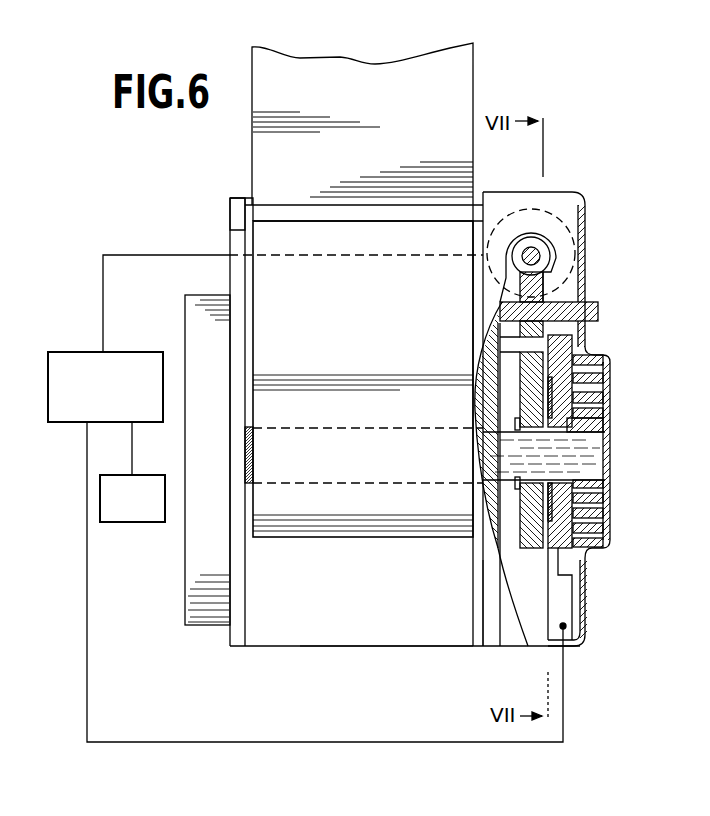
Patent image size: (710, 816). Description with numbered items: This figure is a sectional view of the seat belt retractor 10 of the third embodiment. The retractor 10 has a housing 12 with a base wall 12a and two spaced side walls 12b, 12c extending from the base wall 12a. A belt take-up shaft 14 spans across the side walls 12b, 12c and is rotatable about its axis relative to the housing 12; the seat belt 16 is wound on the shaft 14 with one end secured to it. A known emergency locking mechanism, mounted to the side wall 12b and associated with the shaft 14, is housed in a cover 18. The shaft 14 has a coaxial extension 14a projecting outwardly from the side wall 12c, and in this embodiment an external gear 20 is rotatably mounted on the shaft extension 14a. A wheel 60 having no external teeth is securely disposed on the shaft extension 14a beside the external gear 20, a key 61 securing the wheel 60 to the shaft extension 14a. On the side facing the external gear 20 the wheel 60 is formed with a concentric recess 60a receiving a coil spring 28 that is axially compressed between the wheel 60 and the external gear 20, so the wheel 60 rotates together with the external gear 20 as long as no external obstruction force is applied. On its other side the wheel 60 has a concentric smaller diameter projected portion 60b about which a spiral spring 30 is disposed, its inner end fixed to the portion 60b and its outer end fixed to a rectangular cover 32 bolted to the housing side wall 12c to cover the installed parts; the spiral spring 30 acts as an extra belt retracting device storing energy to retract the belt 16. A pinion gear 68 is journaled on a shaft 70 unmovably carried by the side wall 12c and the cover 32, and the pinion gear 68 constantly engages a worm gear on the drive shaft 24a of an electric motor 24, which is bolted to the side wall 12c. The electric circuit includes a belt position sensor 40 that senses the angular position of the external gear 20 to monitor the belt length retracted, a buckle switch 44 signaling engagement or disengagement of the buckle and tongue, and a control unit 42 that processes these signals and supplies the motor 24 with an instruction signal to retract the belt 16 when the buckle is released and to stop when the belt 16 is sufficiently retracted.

The seat belt retractor 10 is at (365, 718).
The housing 12 is at (302, 648).
The base wall 12a is at (415, 630).
The side wall 12b is at (237, 198).
The side wall 12c is at (492, 635).
The belt take-up shaft 14 is at (383, 483).
The shaft extension 14a is at (592, 465).
The seat belt 16 is at (464, 68).
The cover 18 is at (207, 627).
The external gear 20 is at (530, 550).
The electric motor 24 is at (572, 243).
The drive shaft 24a is at (531, 257).
The coil spring 28 is at (588, 337).
The spiral spring 30 is at (602, 382).
The rectangular cover 32 is at (563, 527).
The belt position sensor 40 is at (562, 613).
The control unit 42 is at (70, 424).
The buckle switch 44 is at (130, 524).
The wheel 60 is at (565, 545).
The concentric recess 60a is at (540, 400).
The projected portion 60b is at (593, 483).
The key 61 is at (612, 425).
The pinion gear 68 is at (545, 287).
The shaft 70 is at (598, 306).